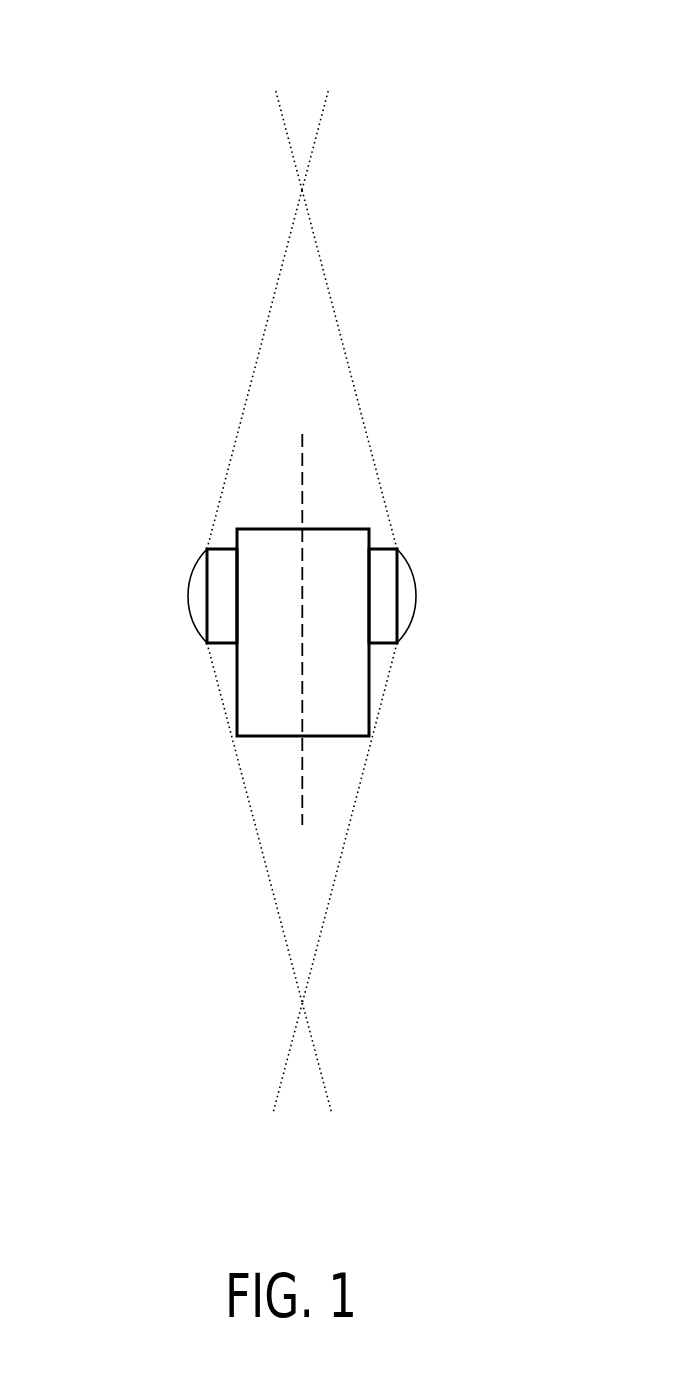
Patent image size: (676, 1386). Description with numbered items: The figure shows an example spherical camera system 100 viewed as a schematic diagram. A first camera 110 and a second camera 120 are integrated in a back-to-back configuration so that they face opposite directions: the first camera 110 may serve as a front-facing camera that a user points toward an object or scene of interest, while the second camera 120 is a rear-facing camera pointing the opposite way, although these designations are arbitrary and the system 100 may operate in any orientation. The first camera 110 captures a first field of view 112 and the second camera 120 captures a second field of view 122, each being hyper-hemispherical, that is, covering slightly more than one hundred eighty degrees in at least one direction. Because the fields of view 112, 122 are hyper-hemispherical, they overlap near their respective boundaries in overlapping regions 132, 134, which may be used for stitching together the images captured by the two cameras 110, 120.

The spherical camera system 100 is at (182, 489).
The first camera 110 is at (258, 612).
The second camera 120 is at (313, 612).
The first field of view 112 is at (98, 640).
The second field of view 122 is at (483, 640).
The overlapping region 132 is at (285, 1198).
The overlapping region 134 is at (285, 82).